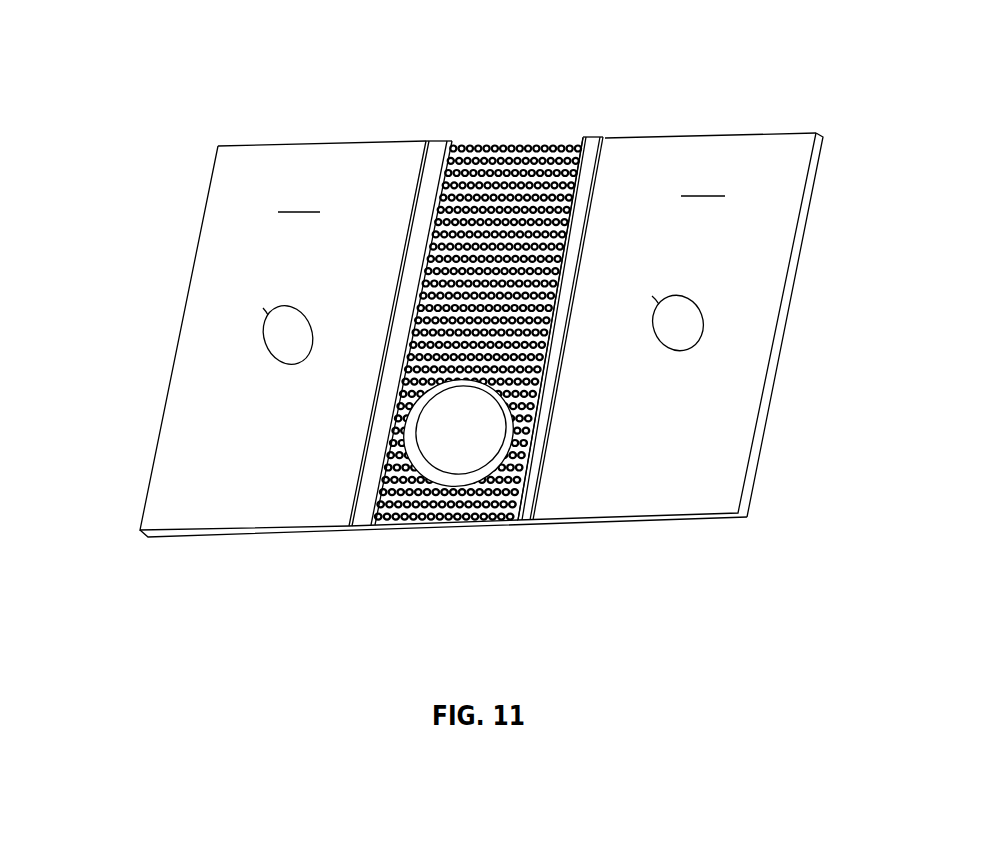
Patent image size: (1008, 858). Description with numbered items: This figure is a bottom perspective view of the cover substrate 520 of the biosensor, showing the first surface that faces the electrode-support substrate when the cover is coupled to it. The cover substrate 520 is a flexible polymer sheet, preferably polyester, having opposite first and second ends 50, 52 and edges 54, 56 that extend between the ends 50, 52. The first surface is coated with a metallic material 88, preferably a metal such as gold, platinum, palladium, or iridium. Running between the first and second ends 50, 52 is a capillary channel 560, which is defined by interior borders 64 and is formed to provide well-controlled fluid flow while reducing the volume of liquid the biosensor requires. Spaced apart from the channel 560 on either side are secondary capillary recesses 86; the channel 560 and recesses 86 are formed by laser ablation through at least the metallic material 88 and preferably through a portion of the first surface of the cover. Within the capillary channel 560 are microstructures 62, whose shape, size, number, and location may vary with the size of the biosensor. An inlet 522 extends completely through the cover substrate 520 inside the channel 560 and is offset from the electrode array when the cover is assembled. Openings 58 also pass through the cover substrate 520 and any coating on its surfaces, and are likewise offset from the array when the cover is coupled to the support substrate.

The first end 50 is at (673, 520).
The second end 52 is at (737, 132).
The edge 54 is at (158, 428).
The edge 56 is at (757, 452).
The openings 58 is at (253, 338).
The microstructures 62 is at (522, 197).
The interior borders 64 is at (458, 147).
The secondary capillary recesses 86 is at (348, 532).
The metallic material 88 is at (501, 190).
The cover substrate 520 is at (248, 140).
The inlet 522 is at (447, 455).
The capillary channel 560 is at (498, 147).